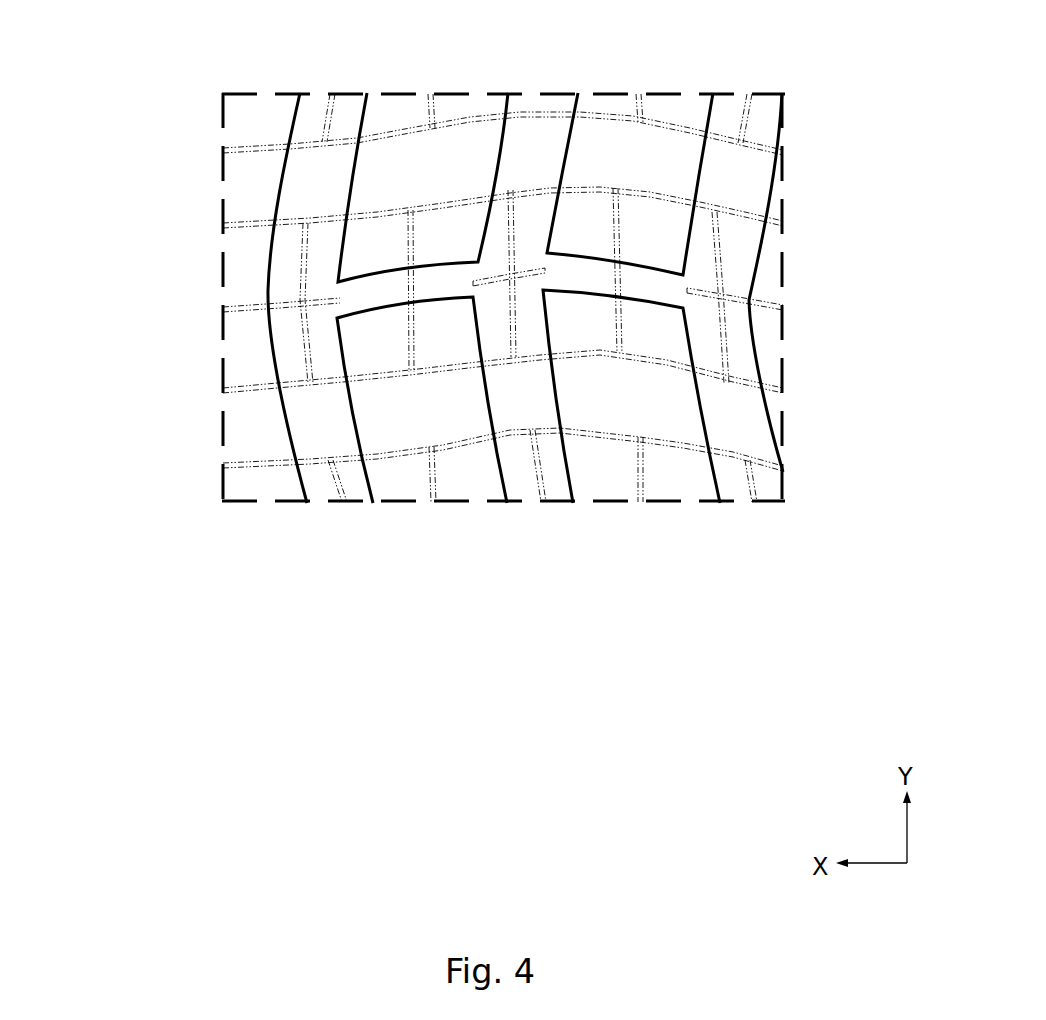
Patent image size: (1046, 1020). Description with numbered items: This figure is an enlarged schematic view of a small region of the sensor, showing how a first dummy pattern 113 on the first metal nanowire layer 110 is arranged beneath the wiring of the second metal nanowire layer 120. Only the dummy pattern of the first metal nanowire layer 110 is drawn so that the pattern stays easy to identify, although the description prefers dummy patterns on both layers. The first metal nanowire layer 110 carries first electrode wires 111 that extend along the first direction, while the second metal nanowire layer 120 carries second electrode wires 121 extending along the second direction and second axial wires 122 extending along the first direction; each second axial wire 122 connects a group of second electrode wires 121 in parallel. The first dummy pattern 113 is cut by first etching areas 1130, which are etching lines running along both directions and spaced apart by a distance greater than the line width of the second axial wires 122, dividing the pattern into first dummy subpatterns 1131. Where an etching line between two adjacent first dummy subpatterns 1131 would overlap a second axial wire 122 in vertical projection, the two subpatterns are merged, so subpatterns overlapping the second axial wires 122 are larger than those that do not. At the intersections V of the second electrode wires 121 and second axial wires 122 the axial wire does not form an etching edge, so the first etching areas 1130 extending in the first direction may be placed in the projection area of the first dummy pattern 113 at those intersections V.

The first metal nanowire layer 110 is at (689, 94).
The first electrode wires 111 is at (597, 123).
The first dummy patterns 113 is at (419, 298).
The first etching areas 1130 is at (221, 152).
The first dummy subpatterns 1131 is at (122, 157).
The second metal nanowire layer 120 is at (606, 298).
The second electrode wires 121 is at (875, 335).
The second axial wires 122 is at (653, 293).
The intersections V is at (735, 289).